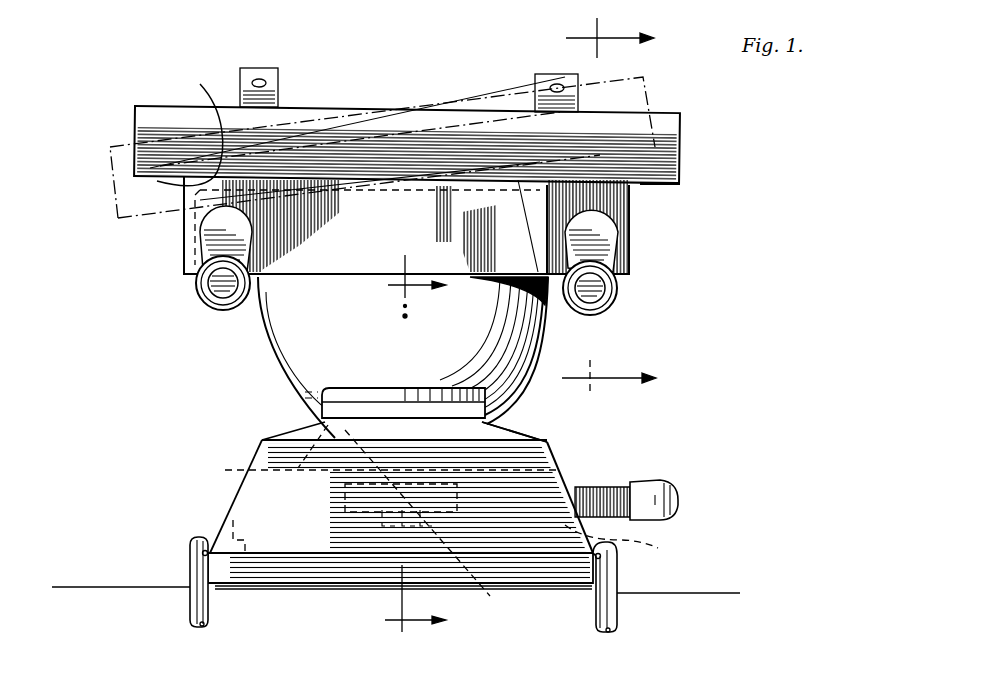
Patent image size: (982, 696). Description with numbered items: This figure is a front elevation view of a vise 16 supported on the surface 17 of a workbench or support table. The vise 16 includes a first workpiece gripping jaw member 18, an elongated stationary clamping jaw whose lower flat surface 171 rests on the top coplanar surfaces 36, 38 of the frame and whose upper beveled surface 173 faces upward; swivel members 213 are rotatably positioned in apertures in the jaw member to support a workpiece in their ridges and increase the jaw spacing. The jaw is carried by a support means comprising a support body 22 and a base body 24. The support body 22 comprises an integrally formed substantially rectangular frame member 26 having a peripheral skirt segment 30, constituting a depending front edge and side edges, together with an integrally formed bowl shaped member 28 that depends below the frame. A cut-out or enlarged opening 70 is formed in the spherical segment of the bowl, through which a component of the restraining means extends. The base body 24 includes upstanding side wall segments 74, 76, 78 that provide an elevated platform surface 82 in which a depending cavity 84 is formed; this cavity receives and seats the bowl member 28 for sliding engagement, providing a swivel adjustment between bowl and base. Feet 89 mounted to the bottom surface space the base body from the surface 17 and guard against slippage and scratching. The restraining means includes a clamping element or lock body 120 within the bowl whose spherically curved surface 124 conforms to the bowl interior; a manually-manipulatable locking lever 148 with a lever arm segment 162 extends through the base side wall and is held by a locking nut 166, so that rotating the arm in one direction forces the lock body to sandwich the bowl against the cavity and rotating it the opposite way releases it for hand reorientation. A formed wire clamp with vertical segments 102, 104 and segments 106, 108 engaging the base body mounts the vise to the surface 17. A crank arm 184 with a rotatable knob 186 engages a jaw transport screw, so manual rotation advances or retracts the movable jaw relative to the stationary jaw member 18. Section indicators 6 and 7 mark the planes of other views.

The section line 6- 6 is at (619, 207).
The section line 7- 7 is at (428, 443).
The vise 16 is at (765, 258).
The surface 17 is at (95, 584).
The first workpiece gripping jaw member 18 is at (680, 151).
The support body 22 is at (152, 250).
The base body 24 is at (210, 455).
The frame member 26 is at (619, 241).
The bowl shaped member 28 is at (547, 353).
The peripheral skirt segment 30 is at (411, 227).
The top coplanar surface 36 is at (660, 186).
The top coplanar surface 38 is at (190, 128).
The cut-out or enlarged opening 70 is at (345, 380).
The upstanding side wall segment 74 is at (235, 490).
The upstanding side wall segment 76 is at (400, 513).
The upstanding side wall segment 78 is at (563, 462).
The elevated platform surface or top portion 82 is at (530, 432).
The depending cavity 84 is at (392, 468).
The feet 89 is at (225, 591).
The vertical segment 102 is at (189, 604).
The vertical segment 104 is at (617, 606).
The segment 106 is at (233, 520).
The segment 108 is at (632, 543).
The clamping element or lock body 120 is at (408, 397).
The spherically curved surface 124 is at (358, 408).
The manually-manipulatable locking lever 148 is at (378, 531).
The lever arm segment 162 is at (618, 487).
The locking nut 166 is at (436, 524).
The lower flat surface 171 is at (157, 181).
The upper beveled surface 173 is at (135, 115).
The crank arm 184 is at (660, 277).
The rotatable knob 186 is at (200, 299).
The swivel member 213 is at (278, 77).